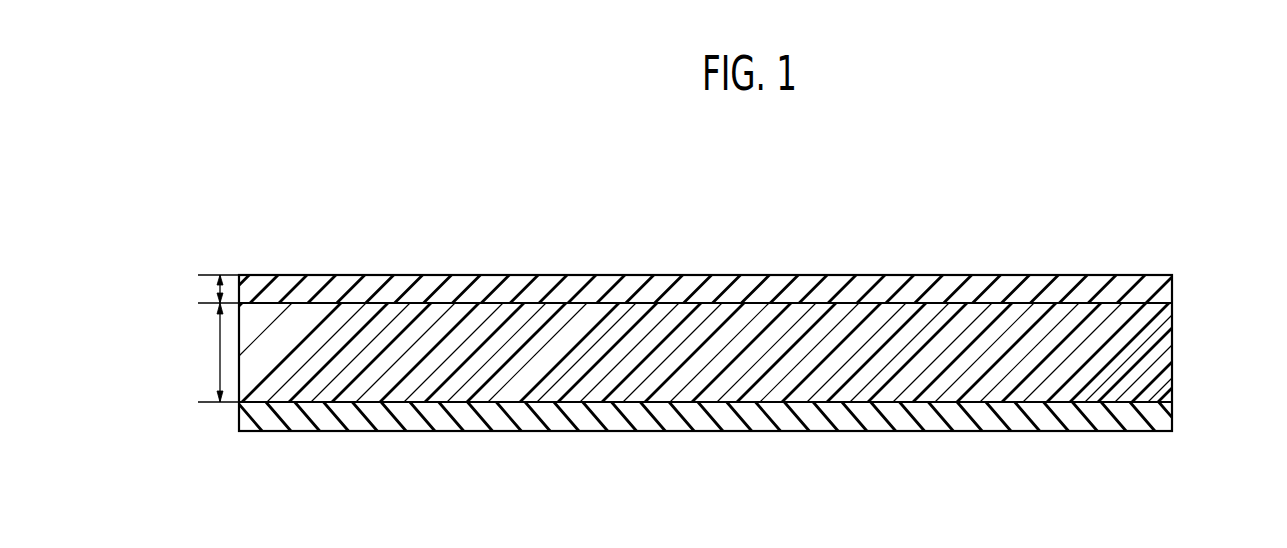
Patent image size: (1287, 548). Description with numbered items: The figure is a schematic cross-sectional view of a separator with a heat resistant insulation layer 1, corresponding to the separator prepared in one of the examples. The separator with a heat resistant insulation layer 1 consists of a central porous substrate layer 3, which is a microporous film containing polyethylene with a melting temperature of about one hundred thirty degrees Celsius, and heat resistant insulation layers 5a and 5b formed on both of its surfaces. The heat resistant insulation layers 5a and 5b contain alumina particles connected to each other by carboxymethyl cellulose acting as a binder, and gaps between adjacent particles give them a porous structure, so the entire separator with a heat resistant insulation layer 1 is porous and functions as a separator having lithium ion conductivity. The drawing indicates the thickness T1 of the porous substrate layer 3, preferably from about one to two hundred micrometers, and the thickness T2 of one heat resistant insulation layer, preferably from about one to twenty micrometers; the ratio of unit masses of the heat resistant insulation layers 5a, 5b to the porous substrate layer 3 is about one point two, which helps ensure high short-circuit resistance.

The separator with a heat resistant insulation layer 1 is at (315, 241).
The porous substrate layer 3 is at (1172, 360).
The heat resistant insulation layer 5a is at (1172, 292).
The heat resistant insulation layer 5b is at (1172, 417).
The thickness of the resin porous substrate layer T1 is at (211, 352).
The thickness of one heat resistant insulation layer T2 is at (216, 291).